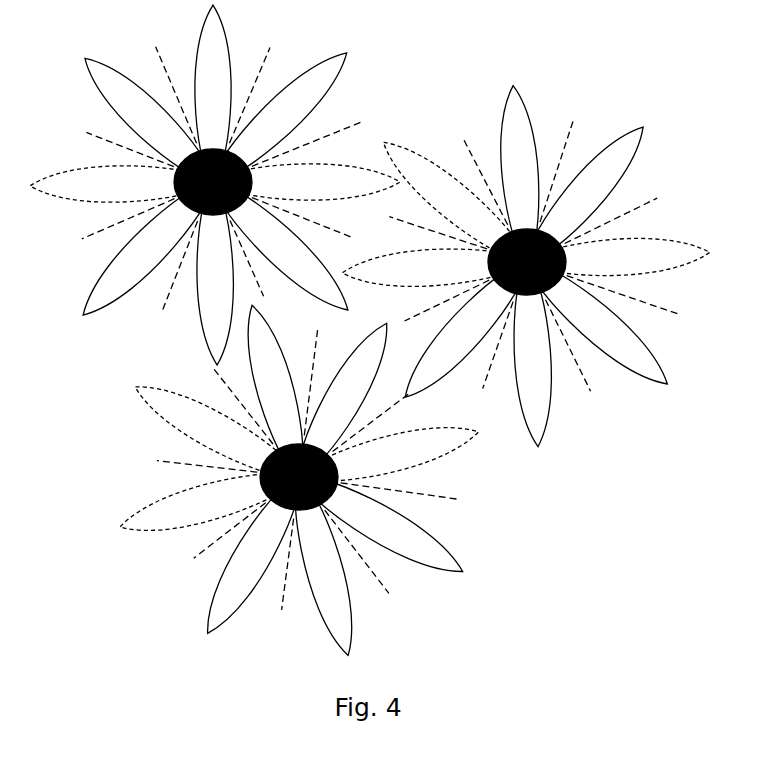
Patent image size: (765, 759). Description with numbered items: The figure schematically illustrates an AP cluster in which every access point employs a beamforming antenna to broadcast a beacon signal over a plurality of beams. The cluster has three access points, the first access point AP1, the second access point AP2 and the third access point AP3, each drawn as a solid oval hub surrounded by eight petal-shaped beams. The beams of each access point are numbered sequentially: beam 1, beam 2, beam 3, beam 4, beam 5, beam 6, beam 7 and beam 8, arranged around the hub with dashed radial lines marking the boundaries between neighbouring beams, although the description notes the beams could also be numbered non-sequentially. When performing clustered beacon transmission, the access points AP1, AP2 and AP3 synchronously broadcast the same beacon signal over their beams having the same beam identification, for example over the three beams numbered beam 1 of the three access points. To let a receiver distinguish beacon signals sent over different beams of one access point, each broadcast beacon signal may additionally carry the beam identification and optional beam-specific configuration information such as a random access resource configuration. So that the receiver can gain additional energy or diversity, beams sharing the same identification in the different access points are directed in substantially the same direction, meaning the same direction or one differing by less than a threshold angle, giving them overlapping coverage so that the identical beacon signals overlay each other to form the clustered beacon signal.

The beam1 1 is at (426, 245).
The beam2 2 is at (455, 267).
The beam3 3 is at (446, 375).
The beam4 4 is at (379, 414).
The beam5 5 is at (366, 412).
The beam6 6 is at (299, 356).
The beam7 7 is at (284, 310).
The beam8 8 is at (308, 263).
The access point AP1 is at (213, 182).
The access point AP2 is at (527, 262).
The access point AP3 is at (299, 477).